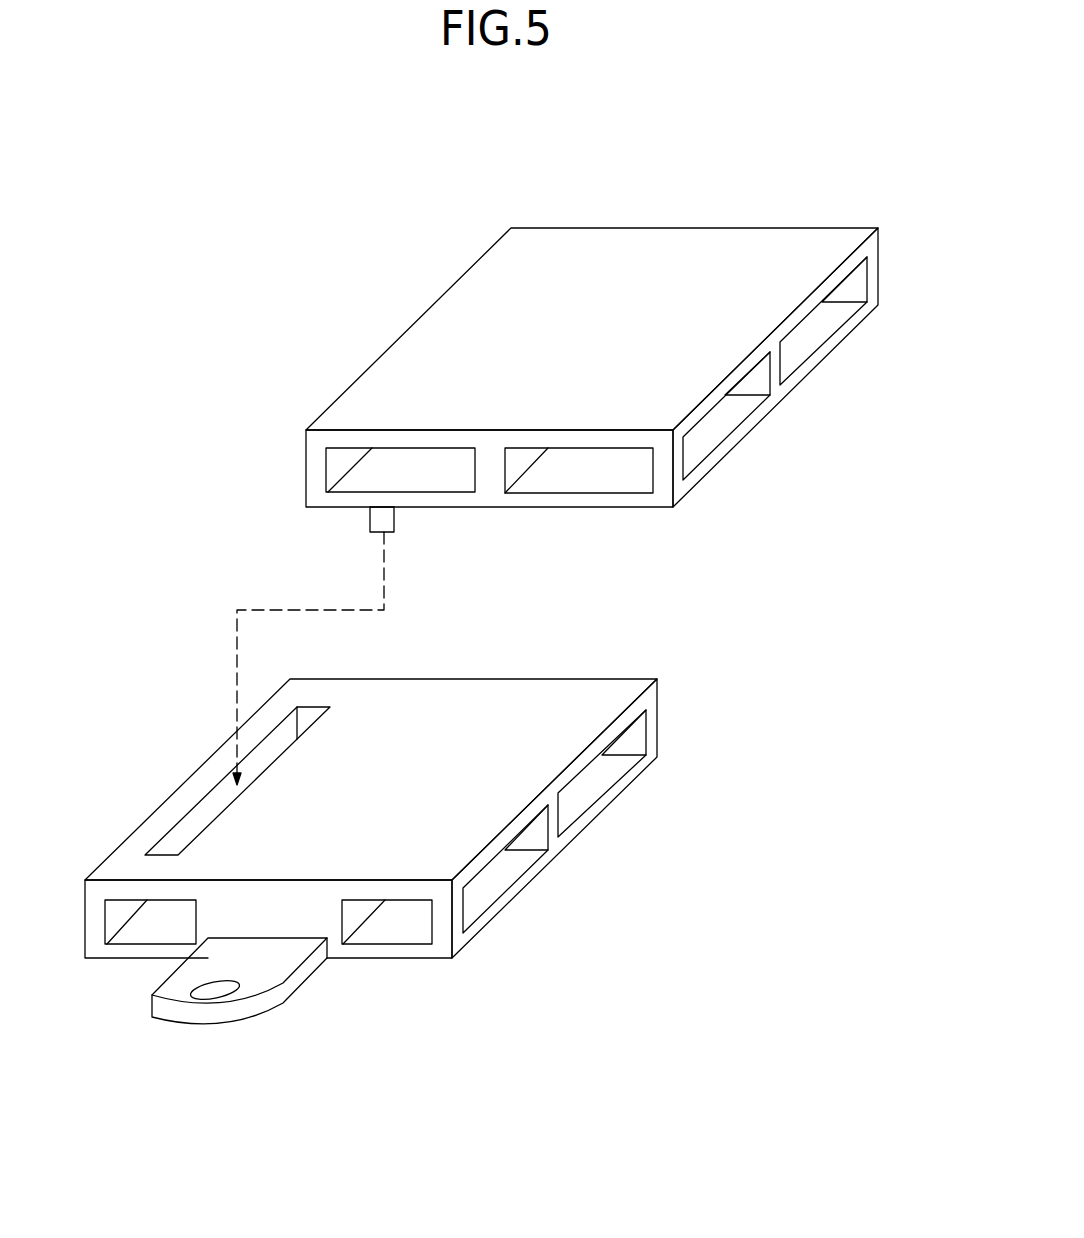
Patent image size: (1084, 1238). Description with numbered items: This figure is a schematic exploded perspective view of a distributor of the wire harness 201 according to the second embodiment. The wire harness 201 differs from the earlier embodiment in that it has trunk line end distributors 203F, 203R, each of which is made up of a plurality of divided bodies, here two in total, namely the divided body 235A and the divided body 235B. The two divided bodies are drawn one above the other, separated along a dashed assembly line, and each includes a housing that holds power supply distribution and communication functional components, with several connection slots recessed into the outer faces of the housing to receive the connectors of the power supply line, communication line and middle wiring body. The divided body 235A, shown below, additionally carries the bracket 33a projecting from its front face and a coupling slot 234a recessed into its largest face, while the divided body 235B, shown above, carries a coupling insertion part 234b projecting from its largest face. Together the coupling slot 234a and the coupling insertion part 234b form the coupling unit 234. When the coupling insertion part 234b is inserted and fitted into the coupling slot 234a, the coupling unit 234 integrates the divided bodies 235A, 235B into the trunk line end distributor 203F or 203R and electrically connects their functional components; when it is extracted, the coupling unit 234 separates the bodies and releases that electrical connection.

The wire harness 201 is at (297, 148).
The trunk line end distributor 203F is at (290, 303).
The trunk line end distributor 203R is at (416, 869).
The divided body 235A is at (202, 753).
The divided body 235B is at (343, 393).
The coupling unit 234 is at (549, 550).
The coupling slot 234a is at (313, 706).
The coupling insertion part 234b is at (413, 508).
The bracket 33a is at (266, 972).